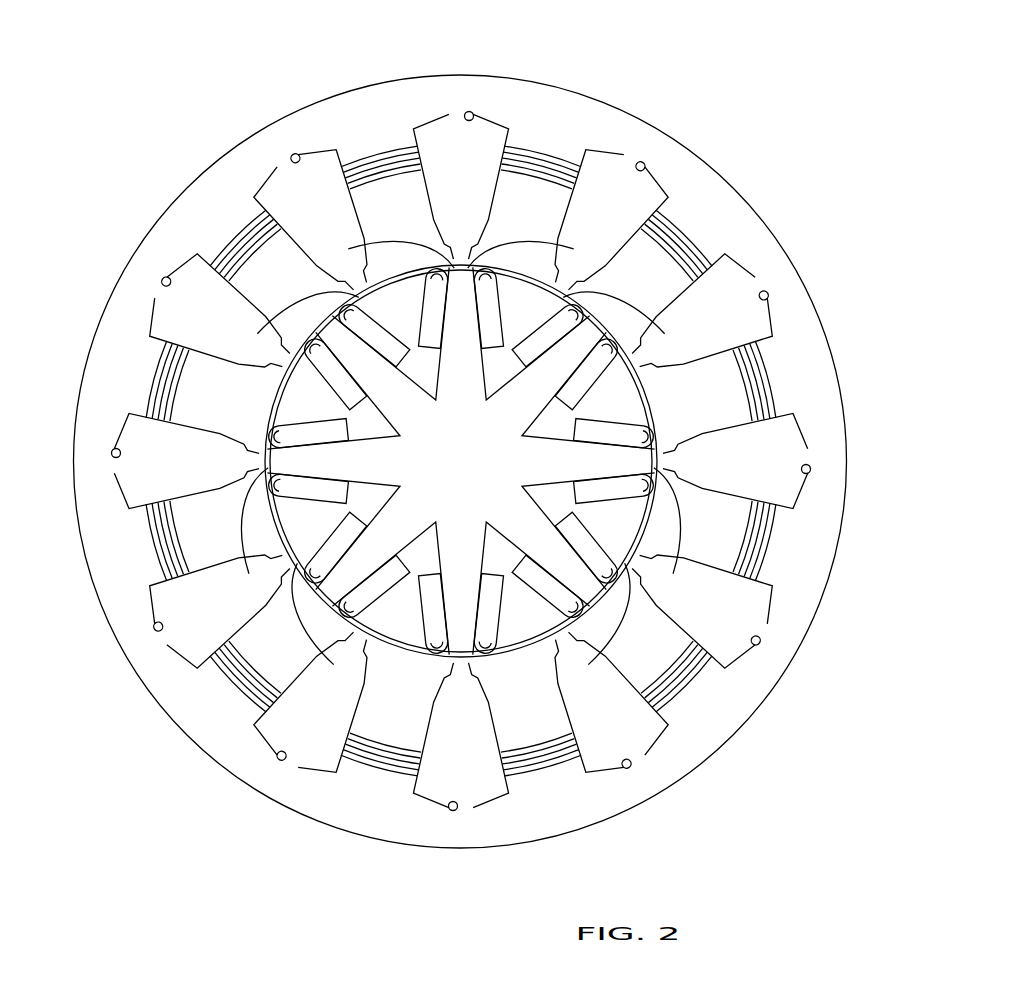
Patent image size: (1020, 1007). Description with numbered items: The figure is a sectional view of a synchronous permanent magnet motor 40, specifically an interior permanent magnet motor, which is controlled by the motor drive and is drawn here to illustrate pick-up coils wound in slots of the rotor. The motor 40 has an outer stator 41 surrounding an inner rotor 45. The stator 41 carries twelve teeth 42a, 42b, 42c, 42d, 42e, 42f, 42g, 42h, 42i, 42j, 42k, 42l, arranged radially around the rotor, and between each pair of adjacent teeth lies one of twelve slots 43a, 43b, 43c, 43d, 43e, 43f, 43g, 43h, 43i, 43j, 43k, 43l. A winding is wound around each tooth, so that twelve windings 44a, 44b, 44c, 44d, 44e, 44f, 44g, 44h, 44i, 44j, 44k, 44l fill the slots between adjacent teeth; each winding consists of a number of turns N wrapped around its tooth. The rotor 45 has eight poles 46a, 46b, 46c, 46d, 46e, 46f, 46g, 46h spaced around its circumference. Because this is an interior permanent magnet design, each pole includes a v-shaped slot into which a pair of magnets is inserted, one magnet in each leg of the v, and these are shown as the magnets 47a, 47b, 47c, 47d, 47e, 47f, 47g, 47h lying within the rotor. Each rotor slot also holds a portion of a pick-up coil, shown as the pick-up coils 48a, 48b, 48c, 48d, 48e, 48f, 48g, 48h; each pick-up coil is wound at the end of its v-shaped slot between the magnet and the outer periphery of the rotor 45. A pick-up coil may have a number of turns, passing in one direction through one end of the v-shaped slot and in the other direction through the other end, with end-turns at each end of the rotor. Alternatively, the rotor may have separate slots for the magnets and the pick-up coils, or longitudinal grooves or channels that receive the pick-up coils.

The synchronous motor 40 is at (686, 70).
The stator 41 is at (542, 79).
The tooth 42a is at (507, 225).
The tooth 42b is at (622, 292).
The tooth 42c is at (700, 404).
The tooth 42d is at (697, 537).
The tooth 42e is at (627, 653).
The tooth 42f is at (511, 723).
The tooth 42g is at (377, 724).
The tooth 42h is at (254, 653).
The tooth 42i is at (195, 539).
The tooth 42j is at (199, 402).
The tooth 42k is at (261, 293).
The tooth 42l is at (375, 227).
The slot 43a is at (472, 114).
The slot 43b is at (642, 170).
The slot 43c is at (764, 300).
The slot 43d is at (807, 472).
The slot 43e is at (755, 640).
The slot 43f is at (627, 765).
The slot 43g is at (450, 808).
The slot 43h is at (281, 757).
The slot 43i is at (160, 628).
The slot 43j is at (116, 452).
The slot 43k is at (166, 282).
The slot 43l is at (290, 158).
The winding 44a is at (541, 140).
The winding 44b is at (708, 242).
The winding 44c is at (790, 400).
The winding 44d is at (779, 562).
The winding 44e is at (684, 710).
The winding 44f is at (555, 777).
The winding 44g is at (378, 778).
The winding 44h is at (216, 694).
The winding 44i is at (142, 520).
The winding 44j is at (133, 384).
The winding 44k is at (228, 217).
The winding 44l is at (366, 128).
The rotor 45 is at (466, 451).
The pole 46a is at (517, 392).
The pole 46b is at (550, 440).
The pole 46c is at (548, 487).
The pole 46d is at (518, 535).
The pole 46e is at (404, 535).
The pole 46f is at (374, 487).
The pole 46g is at (374, 440).
The pole 46h is at (404, 392).
The magnet 47a is at (437, 290).
The magnet 47b is at (599, 404).
The magnet 47c is at (599, 518).
The magnet 47d is at (518, 599).
The magnet 47e is at (404, 599).
The magnet 47f is at (322, 518).
The magnet 47g is at (322, 404).
The magnet 47h is at (445, 302).
The pick-up coil 48a is at (584, 280).
The pick-up coil 48b is at (642, 357).
The pick-up coil 48c is at (644, 565).
The pick-up coil 48d is at (570, 646).
The pick-up coil 48e is at (355, 646).
The pick-up coil 48f is at (280, 565).
The pick-up coil 48g is at (280, 357).
The pick-up coil 48h is at (357, 246).